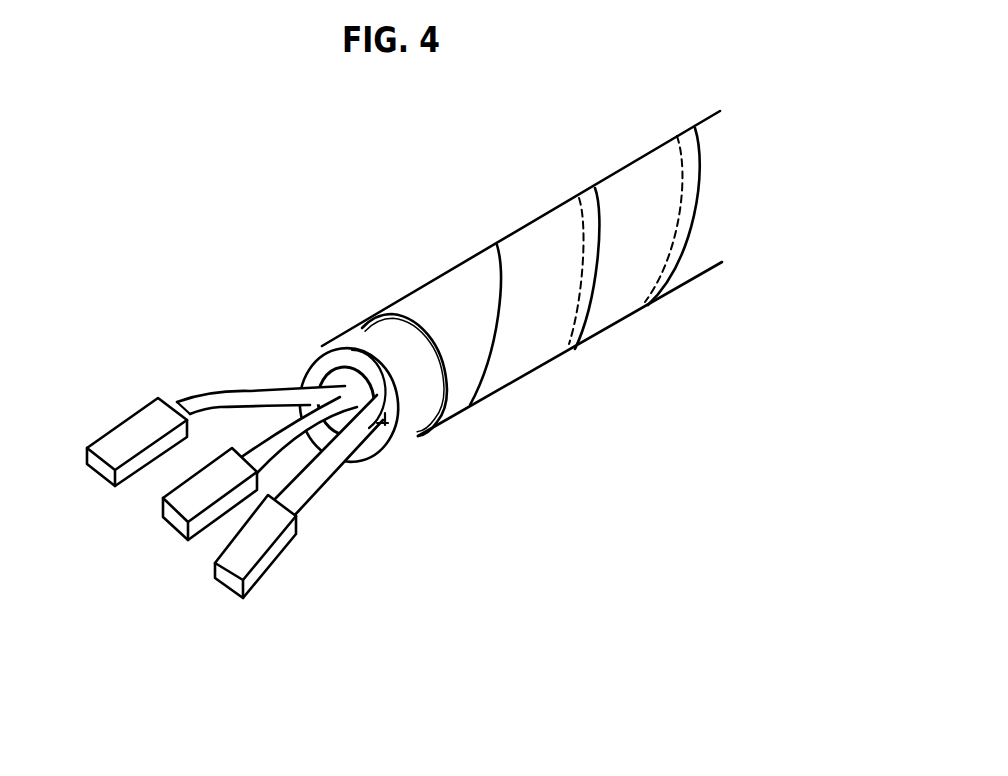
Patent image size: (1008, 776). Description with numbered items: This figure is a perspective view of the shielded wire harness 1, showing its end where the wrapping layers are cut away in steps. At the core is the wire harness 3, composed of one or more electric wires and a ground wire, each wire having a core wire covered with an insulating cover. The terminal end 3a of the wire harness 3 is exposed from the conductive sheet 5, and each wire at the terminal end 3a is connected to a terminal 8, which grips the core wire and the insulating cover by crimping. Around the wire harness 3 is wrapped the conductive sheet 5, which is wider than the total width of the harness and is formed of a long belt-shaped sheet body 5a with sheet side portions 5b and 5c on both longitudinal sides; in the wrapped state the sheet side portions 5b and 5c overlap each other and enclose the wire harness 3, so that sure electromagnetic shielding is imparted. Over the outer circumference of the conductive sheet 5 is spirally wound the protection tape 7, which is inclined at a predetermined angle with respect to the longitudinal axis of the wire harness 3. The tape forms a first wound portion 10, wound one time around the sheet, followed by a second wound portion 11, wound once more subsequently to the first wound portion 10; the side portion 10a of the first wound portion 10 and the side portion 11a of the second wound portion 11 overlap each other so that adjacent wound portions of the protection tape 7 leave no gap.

The shielded wire harness 1 is at (434, 152).
The wire harness 3 is at (255, 398).
The terminal end 3a is at (183, 403).
The conductive sheet 5 is at (347, 320).
The sheet body 5a is at (308, 362).
The sheet side portion 5b is at (388, 402).
The sheet side portion 5c is at (398, 398).
The protection tape 7 is at (621, 148).
The terminal 8 is at (113, 435).
The first wound portion 10 is at (522, 382).
The side portion of first wound portion 10a is at (569, 344).
The second wound portion 11 is at (637, 315).
The side portion of second wound portion 11a is at (586, 312).